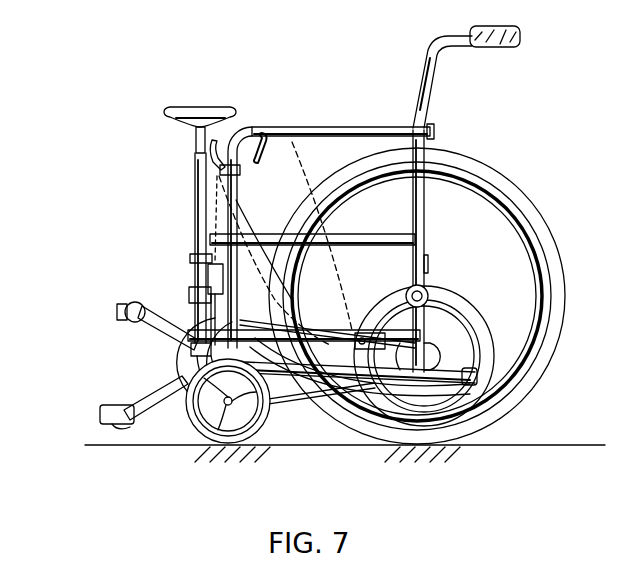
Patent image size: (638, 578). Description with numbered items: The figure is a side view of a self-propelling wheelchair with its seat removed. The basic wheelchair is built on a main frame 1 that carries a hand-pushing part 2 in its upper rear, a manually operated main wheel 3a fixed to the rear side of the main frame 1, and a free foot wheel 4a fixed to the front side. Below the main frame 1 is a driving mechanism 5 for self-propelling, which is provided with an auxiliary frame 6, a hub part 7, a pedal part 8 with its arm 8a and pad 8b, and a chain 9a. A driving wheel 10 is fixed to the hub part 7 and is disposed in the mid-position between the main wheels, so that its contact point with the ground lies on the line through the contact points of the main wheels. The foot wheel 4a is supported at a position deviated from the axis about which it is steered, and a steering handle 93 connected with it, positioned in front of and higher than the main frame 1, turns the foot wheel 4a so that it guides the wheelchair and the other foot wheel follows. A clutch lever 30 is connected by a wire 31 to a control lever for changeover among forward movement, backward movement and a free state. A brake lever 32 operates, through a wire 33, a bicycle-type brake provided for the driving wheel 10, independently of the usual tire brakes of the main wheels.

The main frame 1 is at (363, 128).
The hand-pushing part 2 is at (493, 50).
The main wheel 3a is at (525, 184).
The foot wheel 4a is at (192, 410).
The driving mechanism 5 is at (273, 378).
The auxiliary frame 6 is at (379, 365).
The hub part 7 is at (442, 358).
The pedal part 8 is at (148, 360).
The footrest upper arm 8a is at (118, 311).
The footrest pad 8b is at (100, 415).
The chain 9a is at (258, 322).
The driving wheel 10 is at (470, 303).
The clutch lever 30 is at (247, 138).
The wire 31 is at (296, 143).
The brake lever 32 is at (208, 146).
The wire 33 is at (217, 200).
The steering handle 93 is at (190, 106).